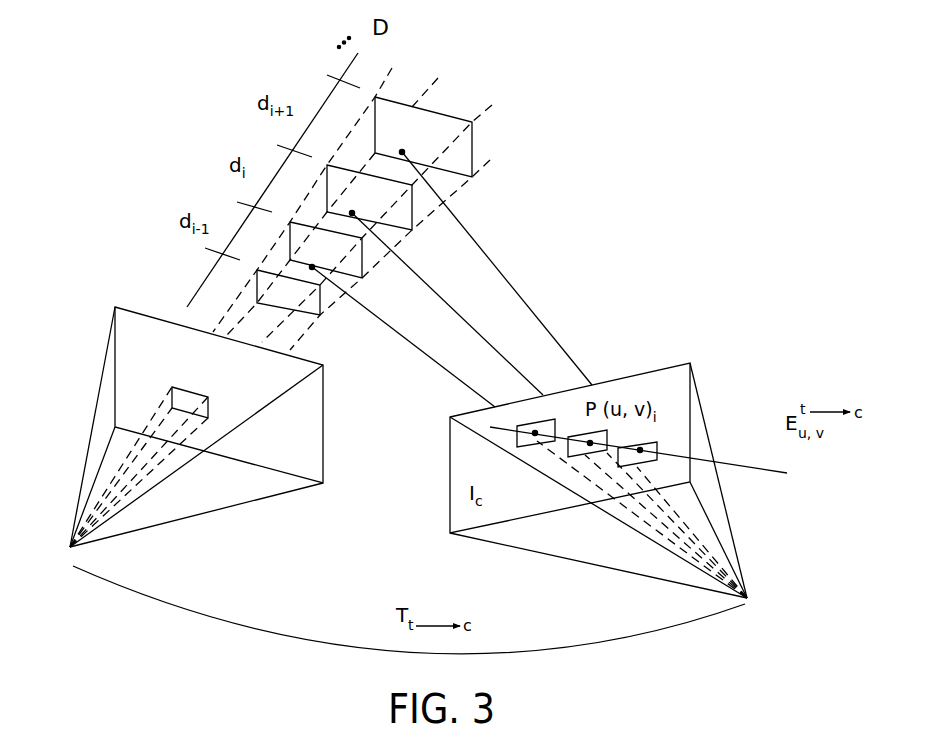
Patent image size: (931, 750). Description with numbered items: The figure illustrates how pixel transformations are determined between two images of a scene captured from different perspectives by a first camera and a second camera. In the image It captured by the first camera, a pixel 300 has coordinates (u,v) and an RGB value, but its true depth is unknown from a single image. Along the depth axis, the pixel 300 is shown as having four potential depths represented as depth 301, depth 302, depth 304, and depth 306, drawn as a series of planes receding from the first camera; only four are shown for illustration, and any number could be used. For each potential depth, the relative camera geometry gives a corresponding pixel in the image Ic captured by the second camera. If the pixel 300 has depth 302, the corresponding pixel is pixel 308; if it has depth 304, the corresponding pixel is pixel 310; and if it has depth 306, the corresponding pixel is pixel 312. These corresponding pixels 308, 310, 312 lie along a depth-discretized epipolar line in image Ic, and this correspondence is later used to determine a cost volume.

The pixel 300 is at (171, 389).
The potential depth 301 is at (308, 318).
The potential depth 302 is at (355, 263).
The potential depth 304 is at (407, 212).
The potential depth 306 is at (460, 160).
The pixel 308 is at (534, 444).
The pixel 310 is at (583, 456).
The pixel 312 is at (655, 442).